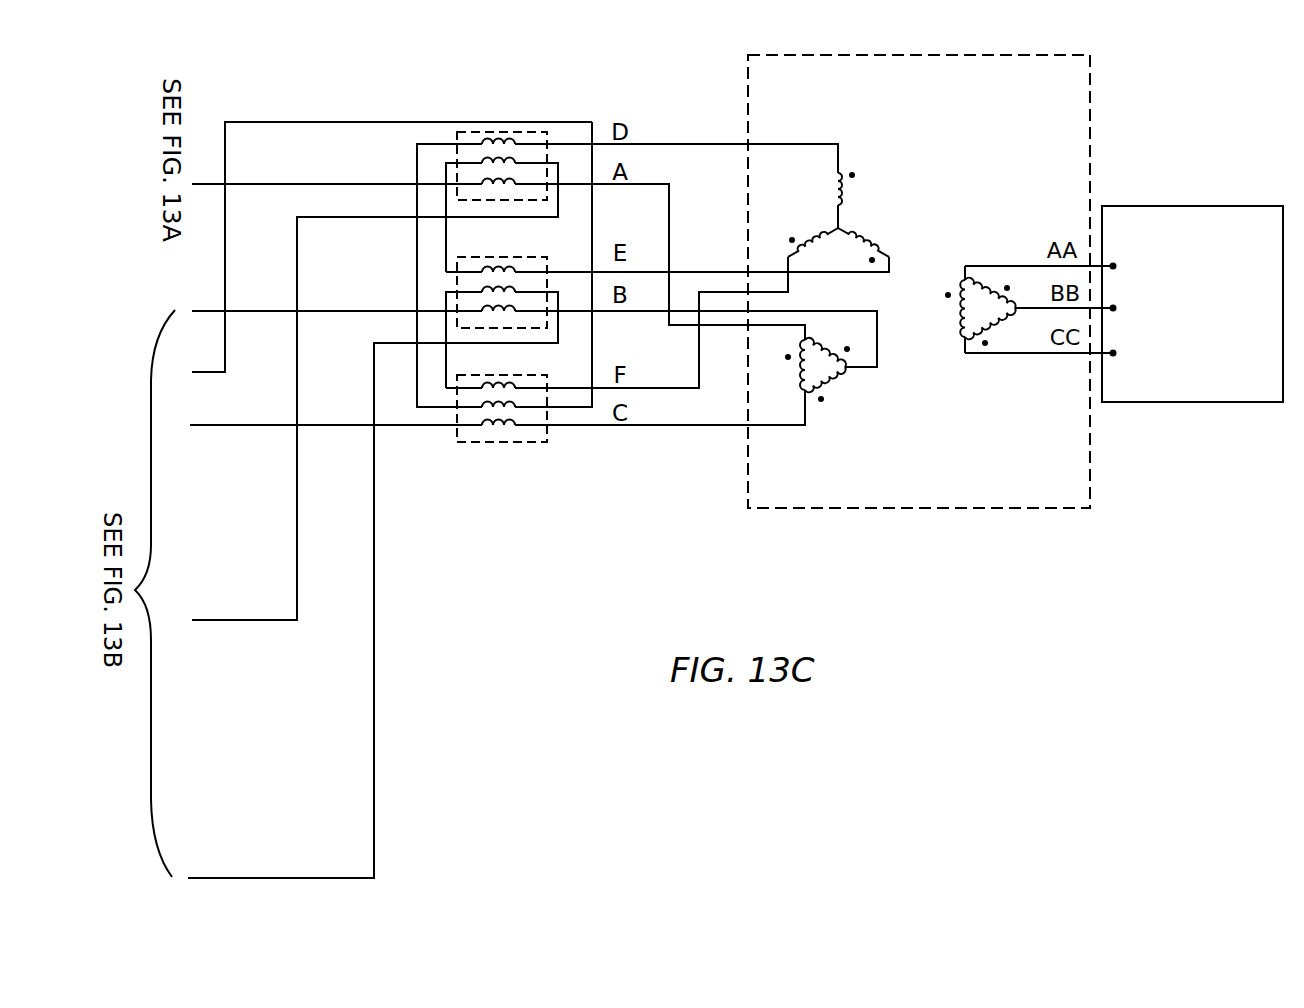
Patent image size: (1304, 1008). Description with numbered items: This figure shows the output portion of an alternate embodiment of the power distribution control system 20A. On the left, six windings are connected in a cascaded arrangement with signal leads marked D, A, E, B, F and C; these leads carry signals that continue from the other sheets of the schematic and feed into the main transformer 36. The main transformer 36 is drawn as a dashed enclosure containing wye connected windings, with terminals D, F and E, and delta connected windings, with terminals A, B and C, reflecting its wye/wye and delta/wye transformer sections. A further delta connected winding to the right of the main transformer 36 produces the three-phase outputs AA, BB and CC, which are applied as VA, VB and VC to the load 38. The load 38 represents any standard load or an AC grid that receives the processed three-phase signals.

The power distribution control system 20A is at (300, 68).
The main transformer 36 is at (1092, 93).
The load 38 is at (1188, 206).